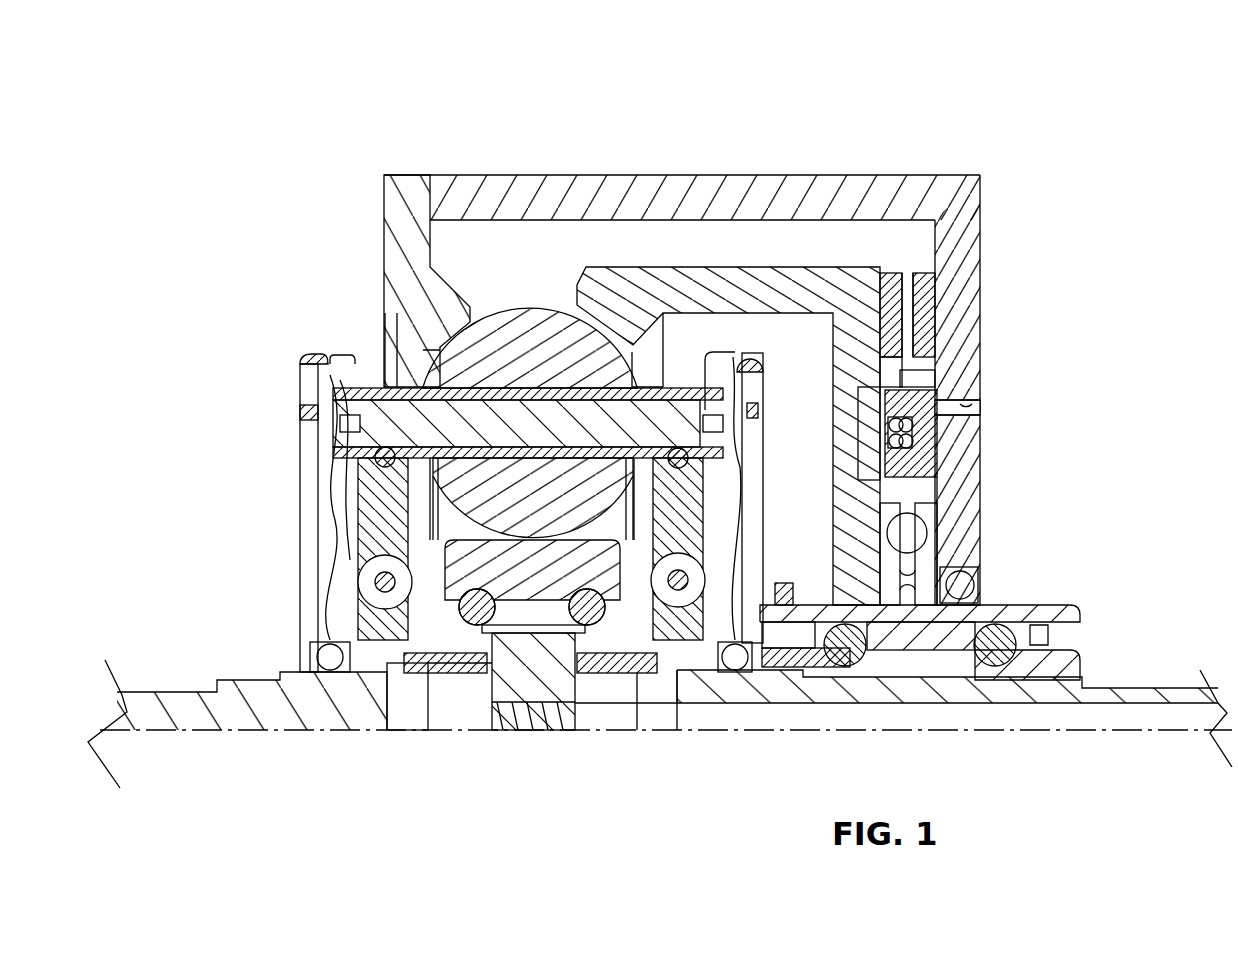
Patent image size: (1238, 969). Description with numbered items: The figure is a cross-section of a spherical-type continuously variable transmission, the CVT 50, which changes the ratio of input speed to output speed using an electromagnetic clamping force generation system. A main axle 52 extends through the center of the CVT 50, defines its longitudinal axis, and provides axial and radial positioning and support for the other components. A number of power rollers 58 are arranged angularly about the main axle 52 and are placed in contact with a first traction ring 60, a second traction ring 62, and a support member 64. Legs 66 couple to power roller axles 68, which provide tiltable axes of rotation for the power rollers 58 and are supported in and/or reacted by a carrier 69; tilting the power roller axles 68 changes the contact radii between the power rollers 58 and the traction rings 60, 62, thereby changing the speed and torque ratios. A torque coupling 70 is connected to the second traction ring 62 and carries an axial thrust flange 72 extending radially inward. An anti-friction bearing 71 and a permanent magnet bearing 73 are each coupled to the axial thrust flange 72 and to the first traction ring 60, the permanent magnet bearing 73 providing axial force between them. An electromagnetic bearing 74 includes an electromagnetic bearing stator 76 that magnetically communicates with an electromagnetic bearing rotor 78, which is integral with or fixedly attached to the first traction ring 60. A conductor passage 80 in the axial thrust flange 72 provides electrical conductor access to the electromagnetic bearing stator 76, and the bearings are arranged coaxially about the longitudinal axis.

The spherical-type CVT 50 is at (182, 130).
The main axle 52 is at (1170, 688).
The power rollers 58 is at (515, 278).
The first traction ring 60 is at (825, 267).
The second traction ring 62 is at (383, 215).
The support member 64 is at (523, 600).
The legs 66 is at (355, 510).
The power roller axles 68 is at (340, 428).
The carrier 69 is at (291, 362).
The torque coupling 70 is at (688, 175).
The anti-friction bearing 71 is at (935, 500).
The axial thrust flange 72 is at (980, 265).
The permanent magnet bearing 73 is at (923, 272).
The electromagnetic bearing 74 is at (935, 372).
The electromagnetic bearing stator 76 is at (883, 487).
The electromagnetic bearing rotor 78 is at (923, 498).
The conductor passage 80 is at (962, 408).